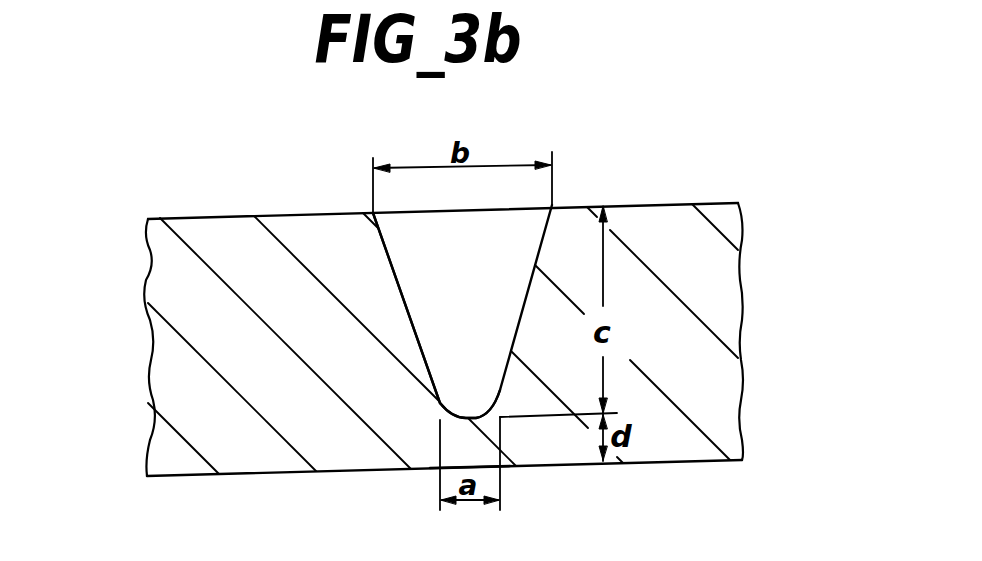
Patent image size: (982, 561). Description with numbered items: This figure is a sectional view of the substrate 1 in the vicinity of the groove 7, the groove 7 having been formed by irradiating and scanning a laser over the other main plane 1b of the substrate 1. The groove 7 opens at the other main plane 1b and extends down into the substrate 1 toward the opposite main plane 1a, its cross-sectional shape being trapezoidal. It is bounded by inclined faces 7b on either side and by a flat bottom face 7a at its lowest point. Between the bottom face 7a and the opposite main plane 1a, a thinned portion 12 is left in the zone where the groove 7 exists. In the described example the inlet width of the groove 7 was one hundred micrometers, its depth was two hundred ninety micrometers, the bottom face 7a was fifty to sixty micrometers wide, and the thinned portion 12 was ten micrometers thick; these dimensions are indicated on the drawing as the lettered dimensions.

The substrate 1 is at (707, 218).
The lower surface of plate 1a is at (273, 475).
The other main plane 1b is at (239, 217).
The groove 7 is at (563, 188).
The bottom face 7a is at (458, 418).
The inclined faces 7b is at (402, 286).
The thinned portion 12 is at (432, 447).